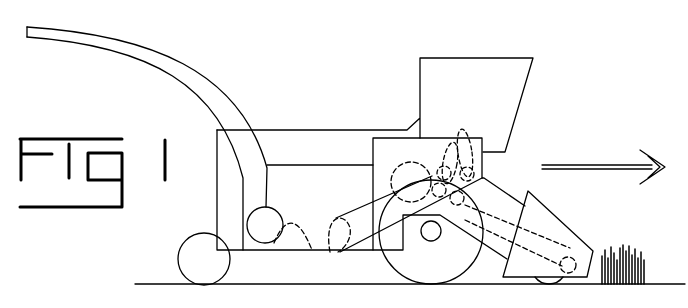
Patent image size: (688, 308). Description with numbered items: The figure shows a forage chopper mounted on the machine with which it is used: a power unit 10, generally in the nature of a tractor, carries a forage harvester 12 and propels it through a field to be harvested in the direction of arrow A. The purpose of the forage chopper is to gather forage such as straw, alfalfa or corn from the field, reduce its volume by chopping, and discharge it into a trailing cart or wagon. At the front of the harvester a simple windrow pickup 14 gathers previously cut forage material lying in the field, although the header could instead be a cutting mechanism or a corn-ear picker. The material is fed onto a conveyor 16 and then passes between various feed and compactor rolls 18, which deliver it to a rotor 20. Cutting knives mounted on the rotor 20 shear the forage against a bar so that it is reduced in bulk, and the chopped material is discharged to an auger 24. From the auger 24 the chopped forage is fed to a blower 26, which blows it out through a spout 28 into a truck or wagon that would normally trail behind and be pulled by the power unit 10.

The power unit 10 is at (571, 79).
The forage harvester 12 is at (224, 214).
The windrow pickup 14 is at (587, 208).
The conveyor 16 is at (589, 238).
The feed and compactor rolls 18 is at (467, 134).
The rotor 20 is at (392, 172).
The auger 24 is at (336, 246).
The blower 26 is at (285, 212).
The spout 28 is at (164, 58).
The direction of travel arrow A is at (575, 165).